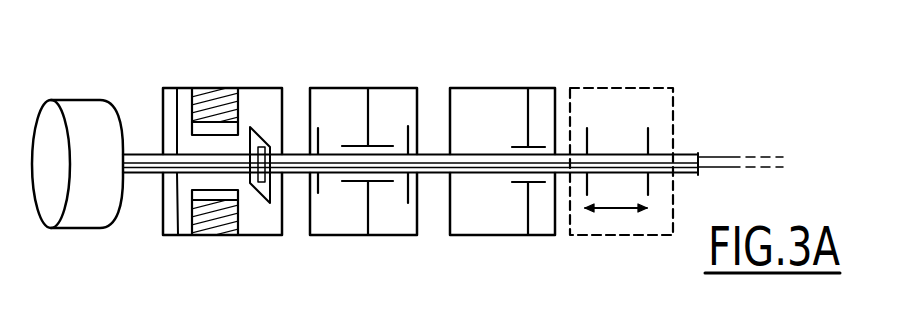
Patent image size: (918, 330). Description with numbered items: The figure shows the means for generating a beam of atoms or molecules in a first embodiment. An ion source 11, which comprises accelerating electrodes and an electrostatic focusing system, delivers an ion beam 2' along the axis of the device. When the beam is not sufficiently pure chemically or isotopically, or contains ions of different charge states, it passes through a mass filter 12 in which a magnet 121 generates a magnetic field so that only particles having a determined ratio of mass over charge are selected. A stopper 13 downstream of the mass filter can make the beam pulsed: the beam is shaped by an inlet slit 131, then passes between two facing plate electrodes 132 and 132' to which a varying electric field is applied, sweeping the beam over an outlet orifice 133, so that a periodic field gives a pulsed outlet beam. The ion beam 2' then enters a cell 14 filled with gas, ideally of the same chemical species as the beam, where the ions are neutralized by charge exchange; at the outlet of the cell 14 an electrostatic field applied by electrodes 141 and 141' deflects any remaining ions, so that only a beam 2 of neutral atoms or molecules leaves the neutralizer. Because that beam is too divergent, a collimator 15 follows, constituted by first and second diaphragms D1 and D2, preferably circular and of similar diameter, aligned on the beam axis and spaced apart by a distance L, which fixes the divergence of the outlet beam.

The ion source 11 is at (89, 233).
The mass filter 12 is at (222, 237).
The magnet 121 is at (213, 105).
The stopper 13 is at (382, 237).
The inlet slit 131 is at (320, 187).
The plate electrode 132 is at (363, 91).
The plate electrode 132' is at (411, 242).
The outlet orifice 133 is at (407, 128).
The neutralizer cell 14 is at (506, 237).
The electrode 141 is at (532, 92).
The electrode 141' is at (550, 242).
The collimator 15 is at (638, 244).
The beam of neutral atoms or molecules 2 is at (453, 106).
The ion beam 2' is at (159, 134).
The first diaphragm D1 is at (587, 130).
The second diaphragm D2 is at (648, 130).
The distance between diaphragms L is at (616, 218).